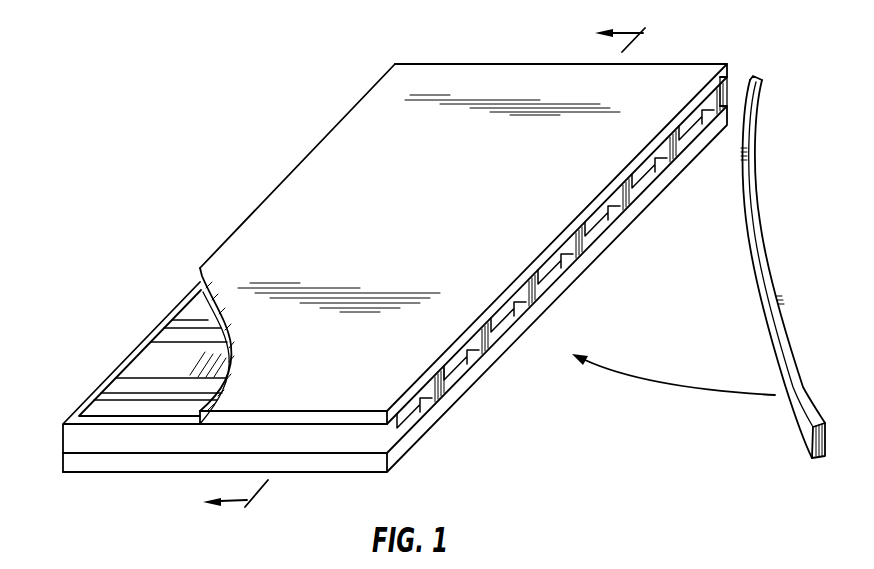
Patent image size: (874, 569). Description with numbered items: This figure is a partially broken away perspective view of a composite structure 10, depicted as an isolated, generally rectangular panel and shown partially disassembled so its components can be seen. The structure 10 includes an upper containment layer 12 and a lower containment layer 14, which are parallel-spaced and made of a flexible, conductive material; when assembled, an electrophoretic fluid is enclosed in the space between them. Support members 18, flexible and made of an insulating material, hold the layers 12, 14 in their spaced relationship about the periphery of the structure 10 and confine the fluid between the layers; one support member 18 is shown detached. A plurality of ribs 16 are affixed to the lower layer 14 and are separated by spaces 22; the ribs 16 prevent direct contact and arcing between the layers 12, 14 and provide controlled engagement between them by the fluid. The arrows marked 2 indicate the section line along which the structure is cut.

The composite structure 10 is at (260, 106).
The upper containment layer 12 is at (305, 217).
The lower containment layer 14 is at (79, 472).
The ribs 16 is at (152, 365).
The support member 18 is at (97, 389).
The spaces 22 is at (182, 318).
The section line 2- 2 is at (423, 273).